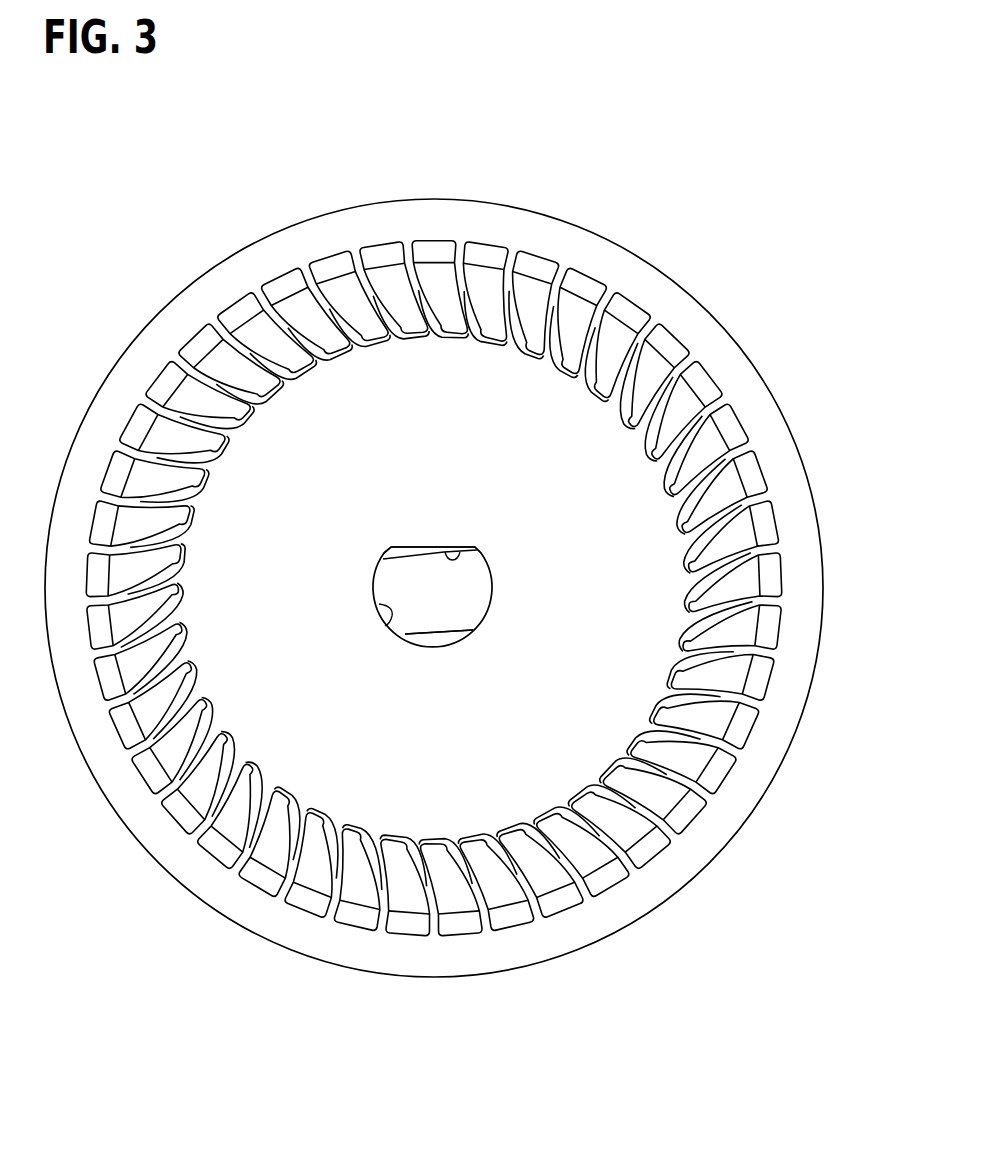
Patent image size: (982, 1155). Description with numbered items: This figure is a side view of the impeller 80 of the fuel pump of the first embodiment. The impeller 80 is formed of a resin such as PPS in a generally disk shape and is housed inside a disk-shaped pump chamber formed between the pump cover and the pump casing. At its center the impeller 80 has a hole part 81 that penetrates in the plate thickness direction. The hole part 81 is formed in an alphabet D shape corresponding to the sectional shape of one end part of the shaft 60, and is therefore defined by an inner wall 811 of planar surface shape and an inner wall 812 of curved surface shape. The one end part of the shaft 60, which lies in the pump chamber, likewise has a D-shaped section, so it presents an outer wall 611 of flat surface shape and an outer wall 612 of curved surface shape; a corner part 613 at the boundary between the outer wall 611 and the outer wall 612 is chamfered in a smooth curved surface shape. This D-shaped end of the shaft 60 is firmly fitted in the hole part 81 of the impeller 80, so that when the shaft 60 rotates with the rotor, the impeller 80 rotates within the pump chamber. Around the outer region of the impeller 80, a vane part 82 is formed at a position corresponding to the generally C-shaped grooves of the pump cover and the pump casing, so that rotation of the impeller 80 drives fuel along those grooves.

The impeller 80 is at (286, 240).
The vane part 82 is at (258, 332).
The hole part 81 is at (470, 632).
The shaft 60 is at (403, 573).
The outer wall 611 is at (422, 543).
The outer wall 612 is at (440, 647).
The corner part 613 is at (382, 560).
The inner wall 811 is at (457, 548).
The inner wall 812 is at (387, 625).